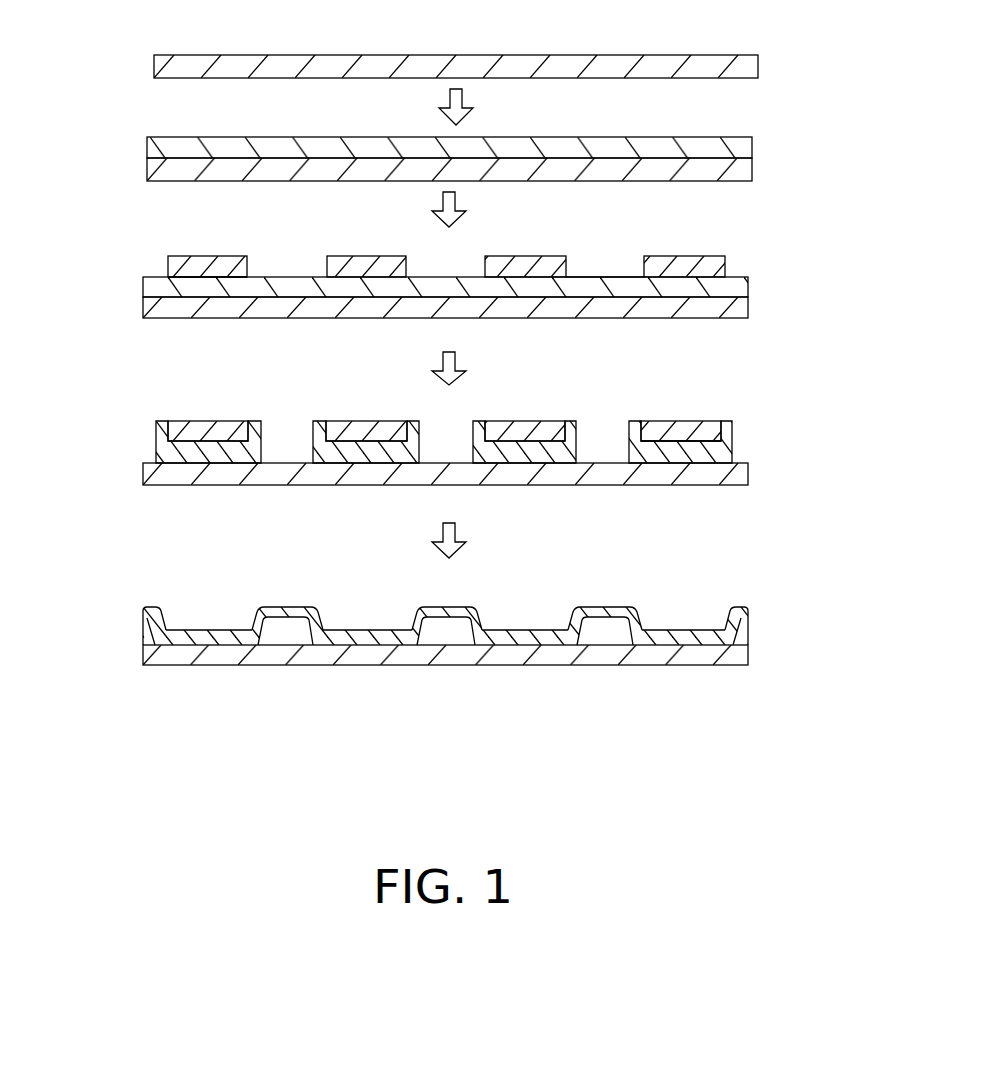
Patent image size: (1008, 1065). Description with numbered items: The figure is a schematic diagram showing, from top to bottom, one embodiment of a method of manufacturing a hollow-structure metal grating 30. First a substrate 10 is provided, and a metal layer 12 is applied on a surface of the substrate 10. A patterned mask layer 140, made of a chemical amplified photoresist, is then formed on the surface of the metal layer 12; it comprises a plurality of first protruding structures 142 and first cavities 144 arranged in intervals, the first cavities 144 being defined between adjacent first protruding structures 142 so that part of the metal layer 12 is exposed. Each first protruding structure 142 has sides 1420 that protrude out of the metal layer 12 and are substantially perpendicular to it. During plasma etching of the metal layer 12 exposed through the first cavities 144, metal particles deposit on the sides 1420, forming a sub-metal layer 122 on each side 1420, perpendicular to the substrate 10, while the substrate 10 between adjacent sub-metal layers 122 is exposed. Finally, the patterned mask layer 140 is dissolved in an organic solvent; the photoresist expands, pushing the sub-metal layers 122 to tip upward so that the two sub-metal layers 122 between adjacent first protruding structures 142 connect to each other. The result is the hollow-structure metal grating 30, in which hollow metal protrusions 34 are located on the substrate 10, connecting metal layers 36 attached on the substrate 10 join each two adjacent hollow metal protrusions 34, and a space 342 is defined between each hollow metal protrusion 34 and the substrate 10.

The substrate 10 is at (718, 62).
The metal layer 12 is at (733, 145).
The patterned mask layer 140 is at (527, 324).
The first protruding structure 142 is at (715, 268).
The first cavity 144 is at (605, 262).
The side 1420 is at (172, 277).
The sub-metal layer 122 is at (262, 427).
The hollow-structure metal grating 30 is at (474, 647).
The hollow metal protrusion 34 is at (273, 608).
The connecting metal layer 36 is at (375, 638).
The space 342 is at (292, 633).